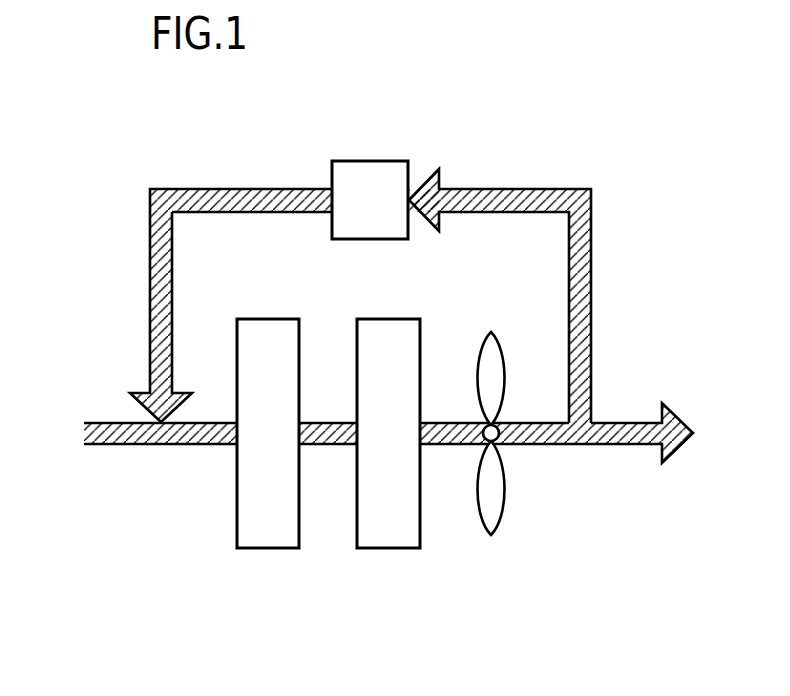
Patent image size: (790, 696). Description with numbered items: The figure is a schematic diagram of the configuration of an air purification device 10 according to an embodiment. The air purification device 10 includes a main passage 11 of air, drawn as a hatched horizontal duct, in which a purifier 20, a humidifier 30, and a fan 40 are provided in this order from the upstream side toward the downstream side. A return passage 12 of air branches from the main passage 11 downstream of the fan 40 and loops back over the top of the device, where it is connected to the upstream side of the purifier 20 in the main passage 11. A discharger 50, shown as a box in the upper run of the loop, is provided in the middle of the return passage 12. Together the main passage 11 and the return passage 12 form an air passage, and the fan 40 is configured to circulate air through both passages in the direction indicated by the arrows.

The air purification device 10 is at (117, 168).
The main passage 11 is at (122, 445).
The return passage 12 is at (512, 188).
The purifier 20 is at (267, 548).
The humidifier 30 is at (385, 548).
The fan 40 is at (488, 535).
The discharger 50 is at (372, 161).